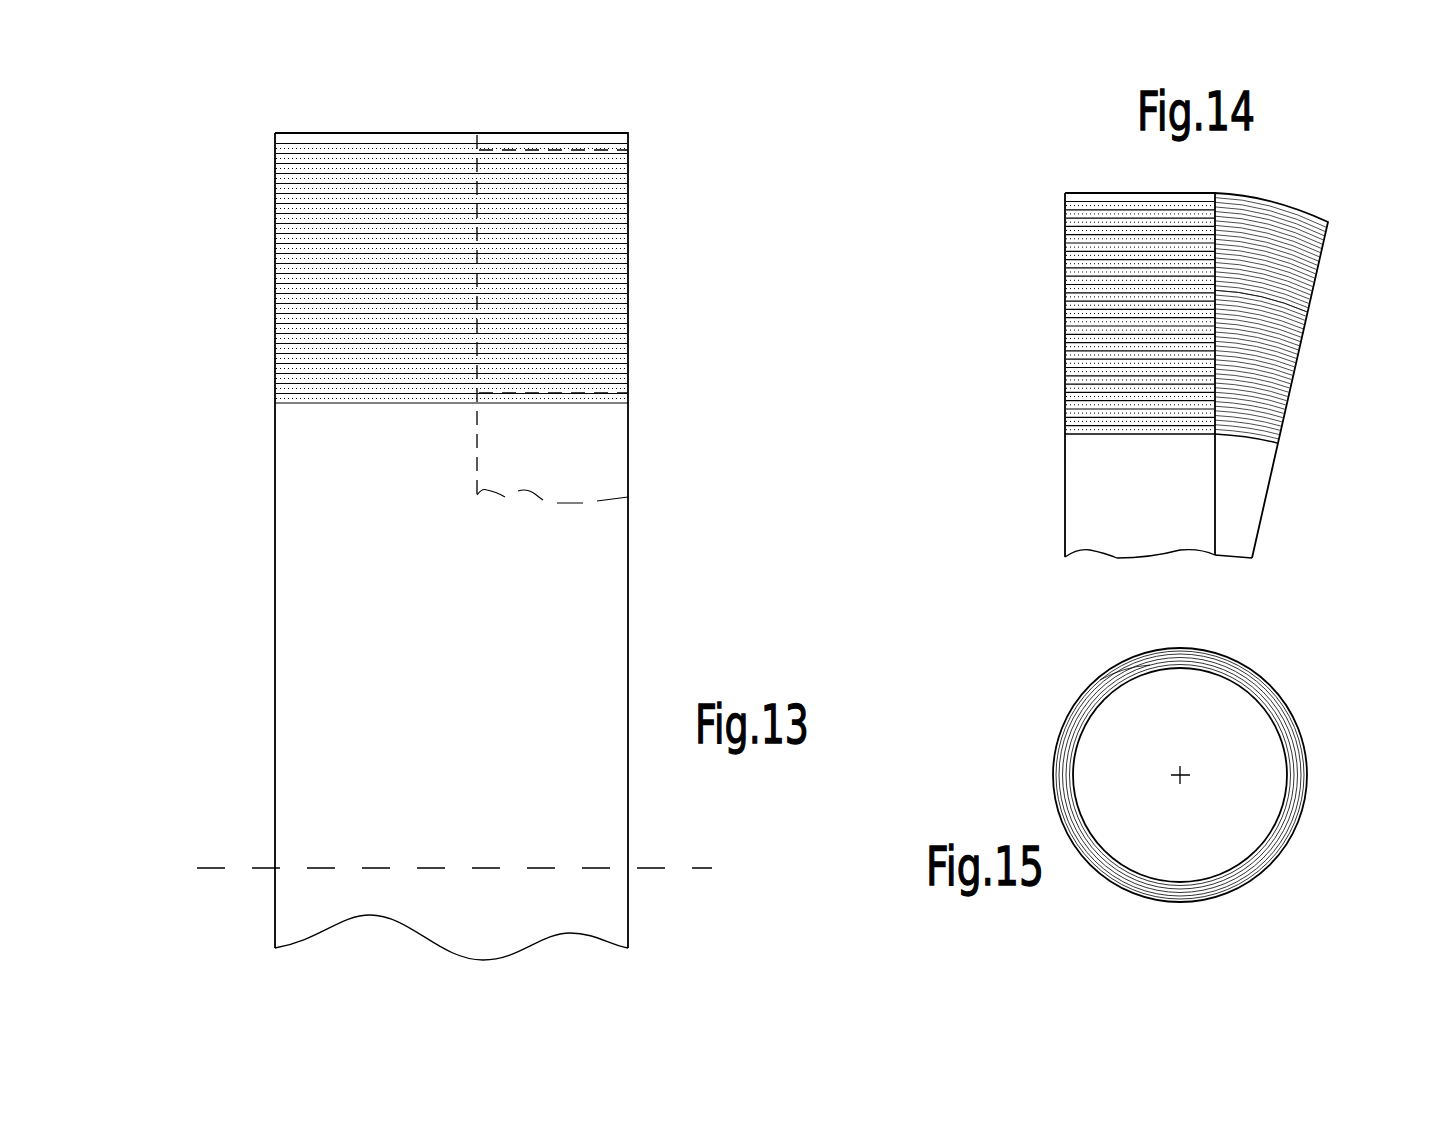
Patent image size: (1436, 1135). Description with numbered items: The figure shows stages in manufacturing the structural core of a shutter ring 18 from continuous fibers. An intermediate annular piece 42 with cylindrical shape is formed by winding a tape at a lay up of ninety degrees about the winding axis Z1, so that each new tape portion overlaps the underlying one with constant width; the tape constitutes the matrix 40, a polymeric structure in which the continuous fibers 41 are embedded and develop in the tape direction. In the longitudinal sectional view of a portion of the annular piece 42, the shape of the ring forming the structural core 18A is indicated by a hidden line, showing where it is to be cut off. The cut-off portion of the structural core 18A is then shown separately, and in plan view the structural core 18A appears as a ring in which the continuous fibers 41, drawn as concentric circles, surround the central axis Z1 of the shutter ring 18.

In FIG. 15, the shutter ring 18 is at (1255, 891).
In FIG. 13, the structural core 18A is at (471, 341).
In FIG. 14, the structural core 18A is at (1050, 353).
In FIG. 15, the structural core 18A is at (1299, 704).
In FIG. 13, the matrix 40 is at (318, 313).
In FIG. 14, the matrix 40 is at (1103, 303).
In FIG. 15, the matrix 40 is at (1302, 798).
In FIG. 13, the continuous fibers 41 is at (417, 217).
In FIG. 14, the continuous fibers 41 is at (1262, 358).
In FIG. 15, the continuous fibers 41 is at (1145, 665).
In FIG. 13, the annular piece 42 is at (630, 607).
In FIG. 13, the central axis Z1 is at (225, 866).
In FIG. 15, the central axis Z1 is at (1182, 775).